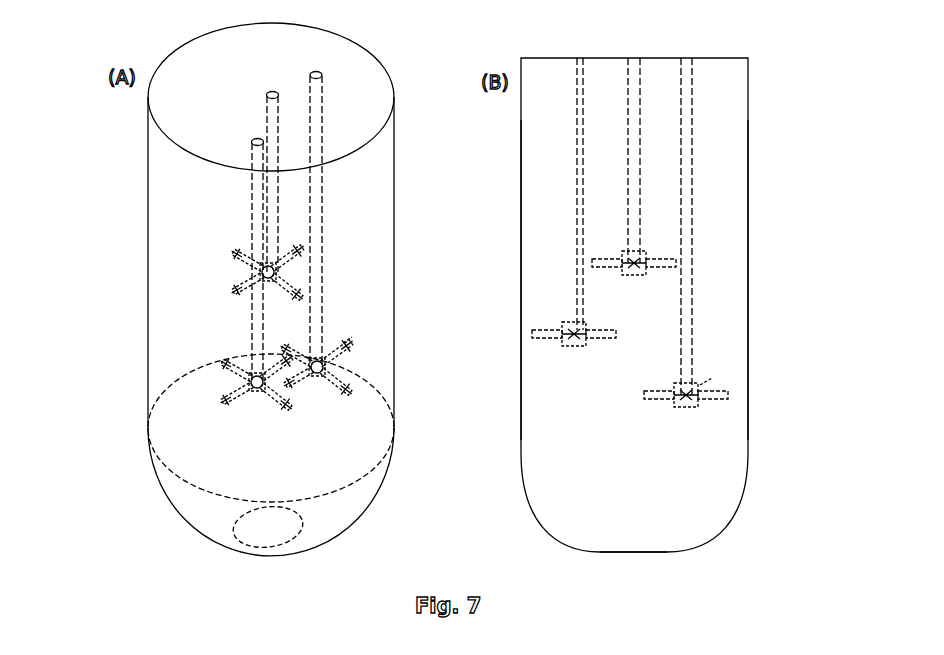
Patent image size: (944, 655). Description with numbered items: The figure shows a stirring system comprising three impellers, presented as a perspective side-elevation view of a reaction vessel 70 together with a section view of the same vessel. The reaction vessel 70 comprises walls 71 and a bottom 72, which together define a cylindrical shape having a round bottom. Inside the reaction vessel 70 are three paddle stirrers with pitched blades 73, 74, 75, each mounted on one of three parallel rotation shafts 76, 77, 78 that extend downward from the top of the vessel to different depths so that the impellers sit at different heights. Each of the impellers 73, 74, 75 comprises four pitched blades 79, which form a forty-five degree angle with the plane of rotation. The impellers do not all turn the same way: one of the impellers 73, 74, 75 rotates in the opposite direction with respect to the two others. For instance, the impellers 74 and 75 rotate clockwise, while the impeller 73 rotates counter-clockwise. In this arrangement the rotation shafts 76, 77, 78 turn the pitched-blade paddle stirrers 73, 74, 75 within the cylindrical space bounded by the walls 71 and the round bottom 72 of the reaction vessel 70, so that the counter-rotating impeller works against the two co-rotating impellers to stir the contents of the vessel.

The reaction vessel 70 is at (471, 289).
The walls 71 is at (433, 268).
The bottom 72 is at (449, 545).
The paddle stirrer with pitched blades 73 is at (404, 368).
The paddle stirrer with pitched blades 74 is at (441, 273).
The paddle stirrer with pitched blades 75 is at (503, 385).
The rotation shaft 76 is at (446, 212).
The rotation shaft 77 is at (427, 220).
The rotation shaft 78 is at (479, 226).
The pitched blades 79 is at (540, 355).